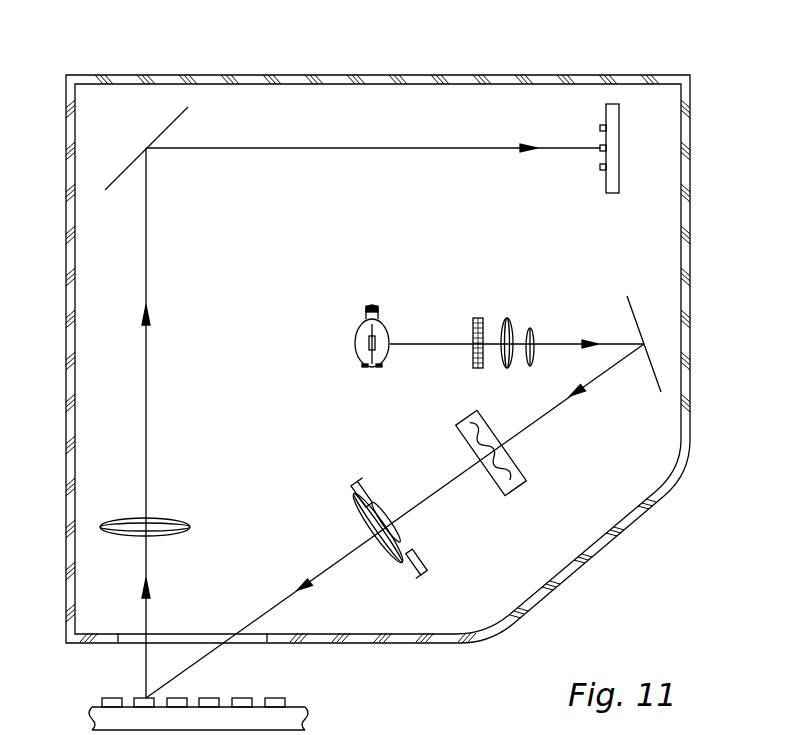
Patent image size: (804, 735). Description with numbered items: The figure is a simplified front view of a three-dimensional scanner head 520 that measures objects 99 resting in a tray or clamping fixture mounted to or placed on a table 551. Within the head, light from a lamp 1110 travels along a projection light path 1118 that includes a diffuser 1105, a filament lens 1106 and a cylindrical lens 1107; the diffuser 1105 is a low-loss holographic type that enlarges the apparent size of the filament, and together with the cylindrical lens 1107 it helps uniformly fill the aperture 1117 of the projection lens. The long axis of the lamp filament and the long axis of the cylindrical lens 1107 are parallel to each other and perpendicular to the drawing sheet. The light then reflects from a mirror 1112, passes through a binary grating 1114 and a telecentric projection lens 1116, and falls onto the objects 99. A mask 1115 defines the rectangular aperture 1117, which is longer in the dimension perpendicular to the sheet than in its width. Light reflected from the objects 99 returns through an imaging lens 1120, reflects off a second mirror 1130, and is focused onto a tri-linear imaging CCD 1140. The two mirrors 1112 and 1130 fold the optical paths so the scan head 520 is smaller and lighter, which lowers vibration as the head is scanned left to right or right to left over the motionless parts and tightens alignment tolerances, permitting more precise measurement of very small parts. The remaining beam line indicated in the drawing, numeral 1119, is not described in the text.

The 3D scanner head 520 is at (692, 152).
The mirror 1130 is at (170, 122).
The tri-linear imaging CCD 1140 is at (606, 110).
The lamp 1110 is at (358, 328).
The diffuser 1105 is at (478, 317).
The filament lens 1106 is at (506, 318).
The cylindrical lens 1107 is at (529, 328).
The mirror 1112 is at (634, 312).
The grating 1114 is at (518, 467).
The mask 1115 is at (362, 483).
The telecentric projection lens 1116 is at (355, 500).
The aperture 1117 is at (390, 517).
The projection light path 1118 is at (322, 572).
The reflected beam 1119 is at (148, 555).
The imaging lens 1120 is at (165, 517).
The objects 99 is at (105, 698).
The table 551 is at (308, 716).